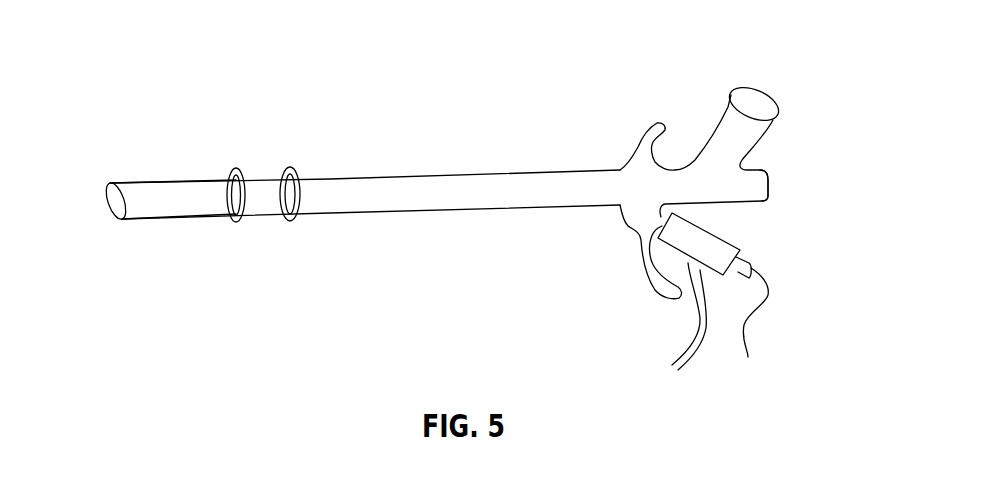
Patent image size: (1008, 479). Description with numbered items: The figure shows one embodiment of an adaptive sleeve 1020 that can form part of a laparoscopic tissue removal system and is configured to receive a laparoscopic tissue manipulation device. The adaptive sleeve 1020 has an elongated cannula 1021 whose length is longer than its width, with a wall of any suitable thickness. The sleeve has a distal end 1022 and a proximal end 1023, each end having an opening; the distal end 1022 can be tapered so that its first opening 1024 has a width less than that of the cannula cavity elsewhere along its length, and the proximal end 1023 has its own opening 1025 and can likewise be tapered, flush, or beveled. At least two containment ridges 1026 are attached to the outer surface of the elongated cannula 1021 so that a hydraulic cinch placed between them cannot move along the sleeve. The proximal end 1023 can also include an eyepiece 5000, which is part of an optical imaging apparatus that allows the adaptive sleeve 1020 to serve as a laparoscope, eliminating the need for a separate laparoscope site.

The adaptive sleeve 1020 is at (234, 95).
The elongated cannula 1021 is at (430, 192).
The distal end 1022 is at (116, 167).
The proximal end 1023 is at (778, 153).
The first opening 1024 is at (110, 193).
The opening 1025 is at (775, 182).
The containment ridges 1026 is at (287, 212).
The eyepiece 5000 is at (758, 103).